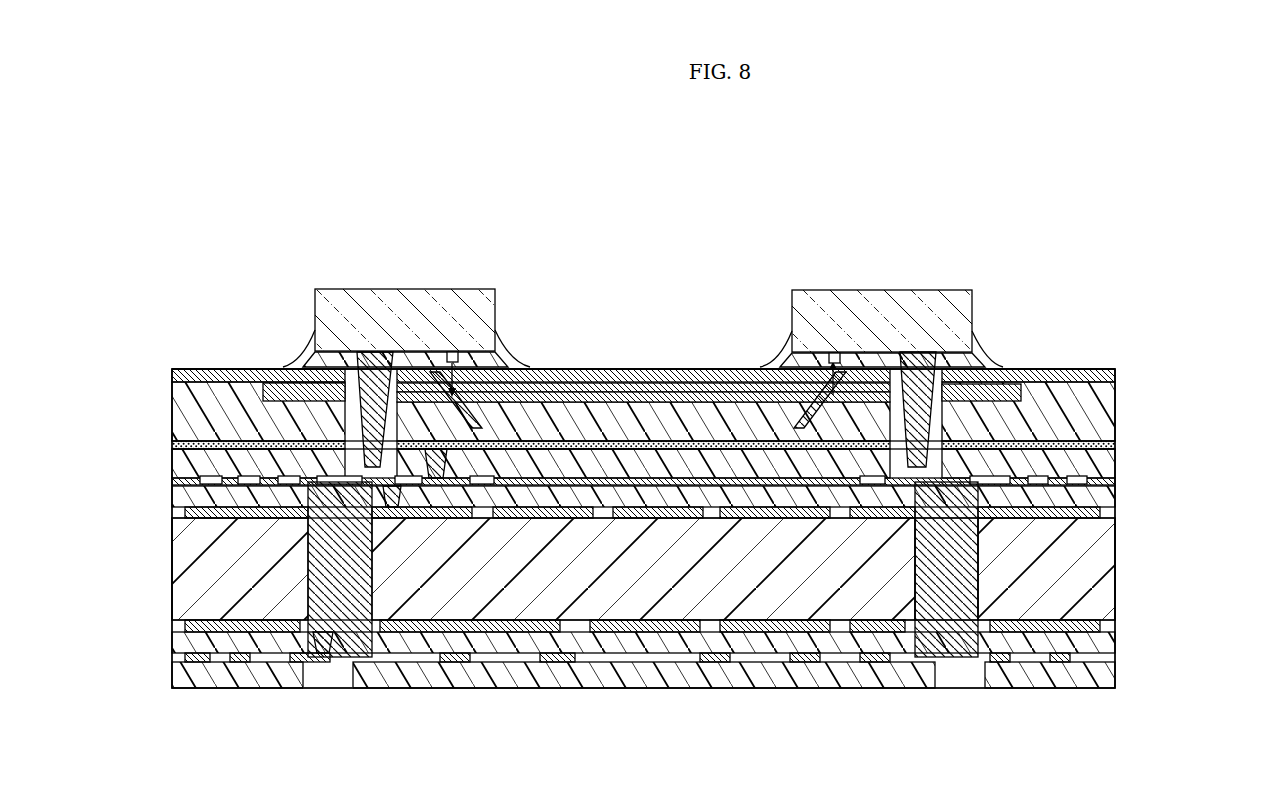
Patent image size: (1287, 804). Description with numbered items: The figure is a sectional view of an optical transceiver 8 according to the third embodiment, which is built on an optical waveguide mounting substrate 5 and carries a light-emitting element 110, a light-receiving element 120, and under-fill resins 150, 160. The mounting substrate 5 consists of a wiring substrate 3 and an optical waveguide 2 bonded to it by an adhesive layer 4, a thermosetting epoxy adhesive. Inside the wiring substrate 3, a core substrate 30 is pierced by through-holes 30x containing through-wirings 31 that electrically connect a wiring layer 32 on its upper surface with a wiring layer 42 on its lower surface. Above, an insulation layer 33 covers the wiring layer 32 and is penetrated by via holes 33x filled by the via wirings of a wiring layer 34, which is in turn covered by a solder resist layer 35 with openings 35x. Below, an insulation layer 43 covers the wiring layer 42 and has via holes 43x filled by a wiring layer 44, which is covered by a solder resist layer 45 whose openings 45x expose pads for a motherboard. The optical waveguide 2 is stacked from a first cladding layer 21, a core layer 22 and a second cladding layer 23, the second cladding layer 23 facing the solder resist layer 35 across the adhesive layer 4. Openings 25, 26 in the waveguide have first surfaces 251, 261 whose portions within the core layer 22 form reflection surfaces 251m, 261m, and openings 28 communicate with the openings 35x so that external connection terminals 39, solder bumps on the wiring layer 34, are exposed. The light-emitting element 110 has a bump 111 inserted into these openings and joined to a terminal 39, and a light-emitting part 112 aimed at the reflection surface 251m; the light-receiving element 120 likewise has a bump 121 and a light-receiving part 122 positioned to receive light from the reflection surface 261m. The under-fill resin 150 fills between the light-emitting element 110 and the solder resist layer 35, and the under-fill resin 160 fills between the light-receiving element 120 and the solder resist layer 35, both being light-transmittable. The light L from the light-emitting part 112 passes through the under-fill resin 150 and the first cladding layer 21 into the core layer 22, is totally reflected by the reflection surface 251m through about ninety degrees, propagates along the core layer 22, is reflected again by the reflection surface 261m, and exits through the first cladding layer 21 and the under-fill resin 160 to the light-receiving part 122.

The optical transceiver 8 is at (160, 236).
The optical waveguide 2 is at (1177, 360).
The wiring substrate 3 is at (1177, 458).
The adhesive layer 4 is at (1118, 446).
The optical waveguide mounting substrate 5 is at (1215, 692).
The first cladding layer 21 is at (1118, 376).
The core layer 22 is at (1022, 392).
The second cladding layer 23 is at (1100, 420).
The opening 25 is at (480, 412).
The first surface 251 is at (503, 400).
The reflection surface 251m is at (455, 398).
The opening 26 is at (820, 410).
The first surface 261 is at (800, 398).
The reflection surface 261m is at (830, 402).
The opening 28 is at (392, 367).
The core substrate 30 is at (1100, 586).
The through-hole 30x is at (960, 575).
The through-wiring 31 is at (975, 560).
The wiring layer 32 is at (1100, 516).
The insulation layer 33 is at (1100, 500).
The via hole 33x is at (392, 507).
The wiring layer 34 is at (1088, 482).
The solder resist layer 35 is at (1105, 460).
The opening 35x is at (436, 478).
The external connection terminal 39 is at (940, 560).
The wiring layer 42 is at (1105, 626).
The insulation layer 43 is at (1105, 642).
The via hole 43x is at (322, 653).
The wiring layer 44 is at (1105, 658).
The solder resist layer 45 is at (1105, 674).
The opening 45x is at (345, 675).
The light-emitting element 110 is at (333, 280).
The bump 111 is at (376, 420).
The light-emitting part 112 is at (455, 352).
The light-receiving element 120 is at (790, 280).
The bump 121 is at (916, 420).
The light-receiving part 122 is at (835, 353).
The under-fill resin 150 is at (523, 360).
The under-fill resin 160 is at (765, 360).
The light L is at (650, 367).